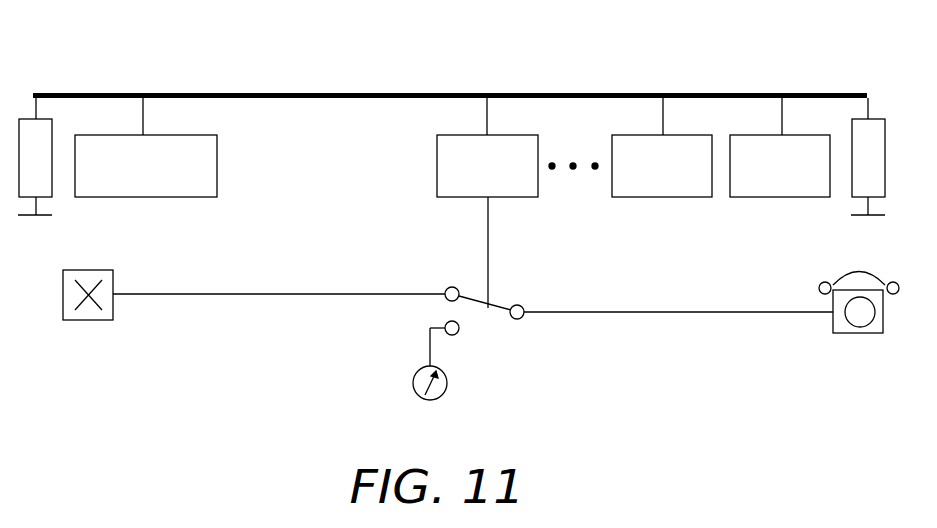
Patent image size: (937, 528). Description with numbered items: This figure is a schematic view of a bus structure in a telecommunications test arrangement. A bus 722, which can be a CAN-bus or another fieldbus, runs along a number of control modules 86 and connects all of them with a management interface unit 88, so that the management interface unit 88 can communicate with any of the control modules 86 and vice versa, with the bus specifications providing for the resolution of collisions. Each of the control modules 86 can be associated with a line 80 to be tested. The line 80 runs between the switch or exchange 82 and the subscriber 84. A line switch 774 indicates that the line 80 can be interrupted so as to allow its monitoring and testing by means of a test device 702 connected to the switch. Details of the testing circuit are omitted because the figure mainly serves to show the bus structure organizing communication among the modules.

The bus 722 is at (303, 91).
The management interface unit 88 is at (127, 180).
The control modules 86 is at (471, 180).
The switch or exchange 82 is at (87, 320).
The line 80 is at (257, 295).
The line switch 774 is at (493, 313).
The test device 702 is at (447, 381).
The subscriber 84 is at (853, 333).